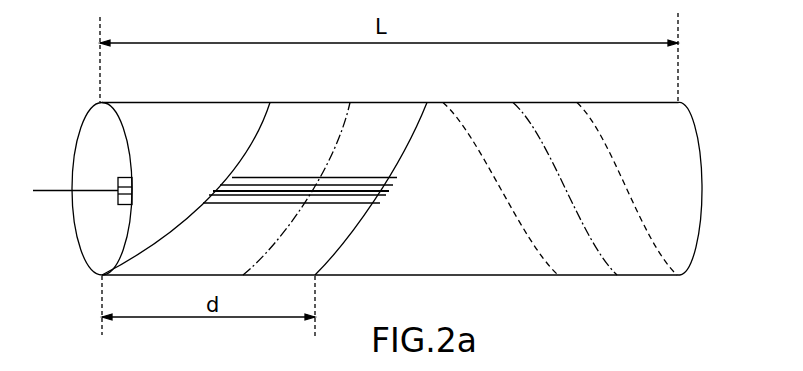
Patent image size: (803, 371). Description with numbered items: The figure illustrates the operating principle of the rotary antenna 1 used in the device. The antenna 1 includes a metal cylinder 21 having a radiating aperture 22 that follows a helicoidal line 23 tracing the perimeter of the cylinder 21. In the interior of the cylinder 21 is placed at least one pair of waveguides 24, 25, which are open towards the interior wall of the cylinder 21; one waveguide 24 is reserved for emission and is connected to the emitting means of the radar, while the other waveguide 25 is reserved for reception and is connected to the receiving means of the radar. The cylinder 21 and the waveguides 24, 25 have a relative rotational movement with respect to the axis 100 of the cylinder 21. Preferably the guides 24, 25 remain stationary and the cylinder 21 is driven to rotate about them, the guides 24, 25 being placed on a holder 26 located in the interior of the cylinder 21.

The antenna 1 is at (82, 110).
The metal cylinder 21 is at (596, 276).
The radiating aperture 22 is at (370, 112).
The helicoidal line 23 is at (327, 163).
The emission waveguide 24 is at (275, 177).
The reception waveguide 25 is at (247, 203).
The holder 26 is at (118, 189).
The axis 100 is at (51, 191).